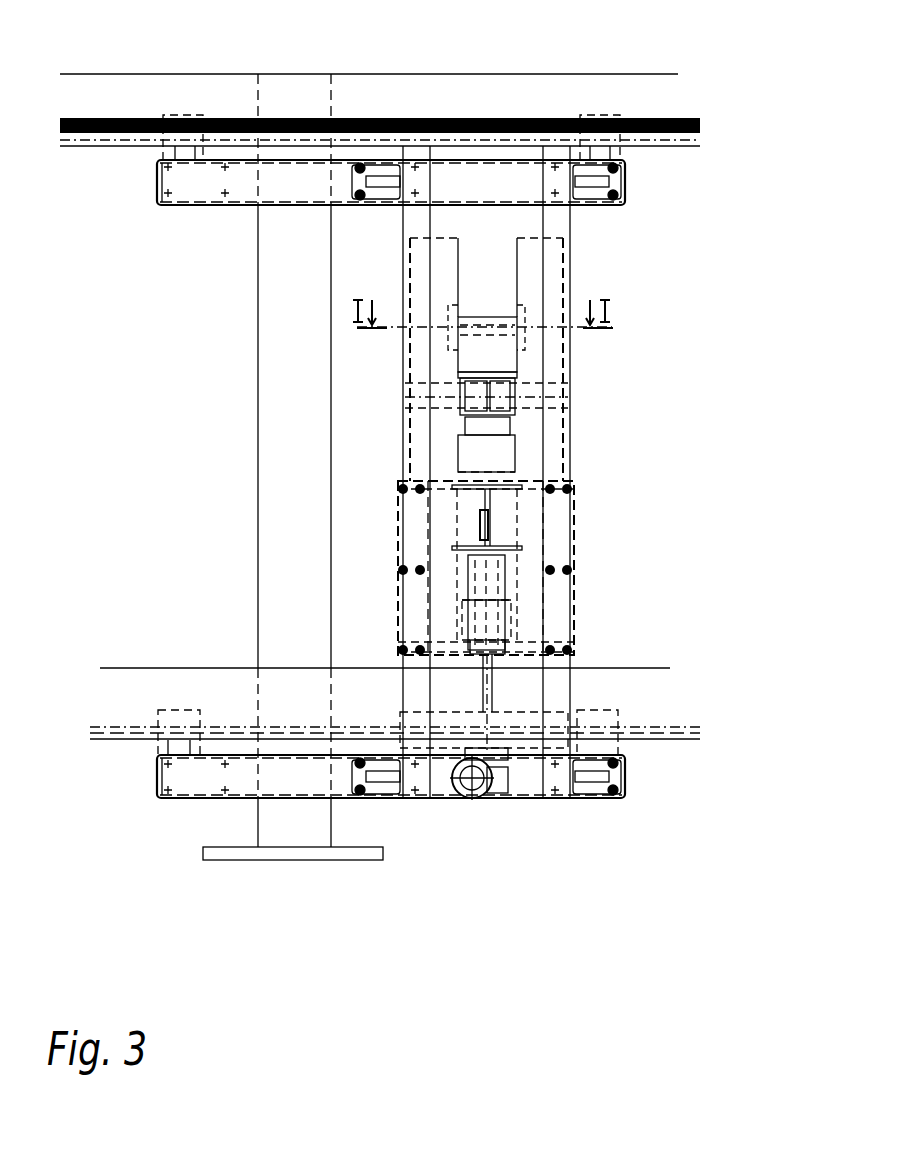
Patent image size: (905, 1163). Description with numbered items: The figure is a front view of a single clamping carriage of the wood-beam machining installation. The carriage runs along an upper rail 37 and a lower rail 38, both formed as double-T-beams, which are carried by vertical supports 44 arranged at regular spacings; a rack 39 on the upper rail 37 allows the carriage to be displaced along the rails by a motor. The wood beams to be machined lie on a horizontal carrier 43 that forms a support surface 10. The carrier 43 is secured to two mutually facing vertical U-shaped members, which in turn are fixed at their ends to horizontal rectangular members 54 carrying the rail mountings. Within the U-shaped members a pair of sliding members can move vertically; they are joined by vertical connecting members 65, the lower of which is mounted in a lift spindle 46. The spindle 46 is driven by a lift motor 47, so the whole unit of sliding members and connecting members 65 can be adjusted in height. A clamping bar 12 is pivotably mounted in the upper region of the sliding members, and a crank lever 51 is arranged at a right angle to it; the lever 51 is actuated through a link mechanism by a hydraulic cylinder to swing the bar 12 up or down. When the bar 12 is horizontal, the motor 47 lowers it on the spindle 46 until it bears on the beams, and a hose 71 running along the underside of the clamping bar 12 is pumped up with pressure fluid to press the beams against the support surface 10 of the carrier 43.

The support surface 10 is at (515, 478).
The clamping beam or bar 12 is at (515, 378).
The upper rail 37 is at (410, 98).
The lower rail 38 is at (155, 685).
The rack 39 is at (540, 118).
The horizontal carrier 43 is at (508, 512).
The vertical supports 44 is at (369, 467).
The lift spindle 46 is at (495, 690).
The lift motor 47 is at (472, 800).
The crank lever 51 is at (490, 360).
The horizontal rectangular members 54 is at (196, 185).
The vertical connecting members 65 is at (478, 455).
The hose 71 is at (483, 427).